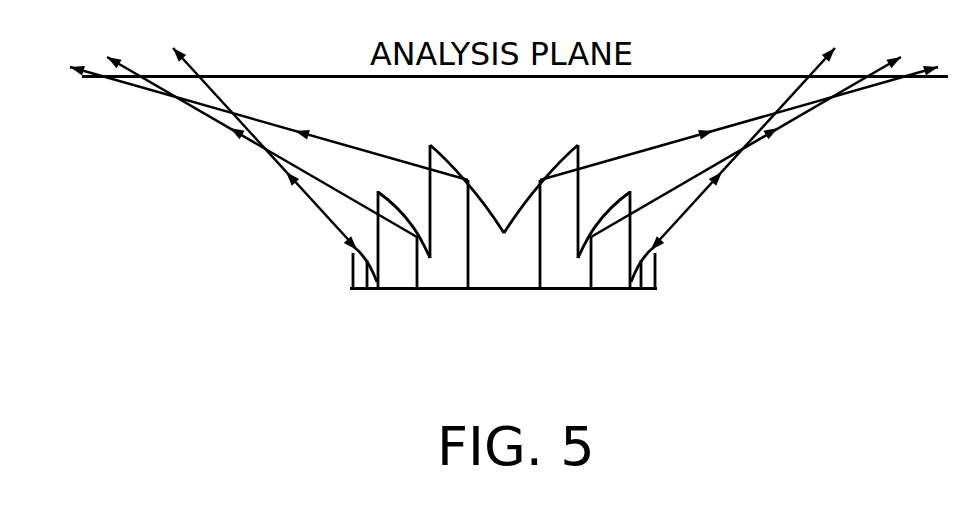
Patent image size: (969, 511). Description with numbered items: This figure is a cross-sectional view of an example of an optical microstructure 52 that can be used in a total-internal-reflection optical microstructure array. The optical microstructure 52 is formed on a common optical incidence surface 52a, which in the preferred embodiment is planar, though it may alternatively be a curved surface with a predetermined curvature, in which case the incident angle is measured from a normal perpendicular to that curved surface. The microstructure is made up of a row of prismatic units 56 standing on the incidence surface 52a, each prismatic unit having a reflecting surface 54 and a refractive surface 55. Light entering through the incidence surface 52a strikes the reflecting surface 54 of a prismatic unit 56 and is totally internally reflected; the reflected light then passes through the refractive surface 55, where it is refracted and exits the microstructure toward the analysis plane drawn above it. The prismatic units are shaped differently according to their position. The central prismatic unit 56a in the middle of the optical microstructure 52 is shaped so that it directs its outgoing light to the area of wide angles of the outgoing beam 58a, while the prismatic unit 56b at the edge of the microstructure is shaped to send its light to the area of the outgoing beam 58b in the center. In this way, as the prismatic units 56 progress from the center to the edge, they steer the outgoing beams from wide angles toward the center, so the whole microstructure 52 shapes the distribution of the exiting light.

The optical microstructure 52 is at (573, 222).
The incidence surface 52a is at (352, 290).
The reflecting surface 54 is at (378, 191).
The refractive surface 55 is at (428, 157).
The prismatic unit 56 is at (346, 223).
The central prismatic unit 56a is at (548, 133).
The edge prismatic unit 56b is at (664, 236).
The outgoing beam 58a is at (131, 80).
The outgoing beam 58b is at (222, 97).